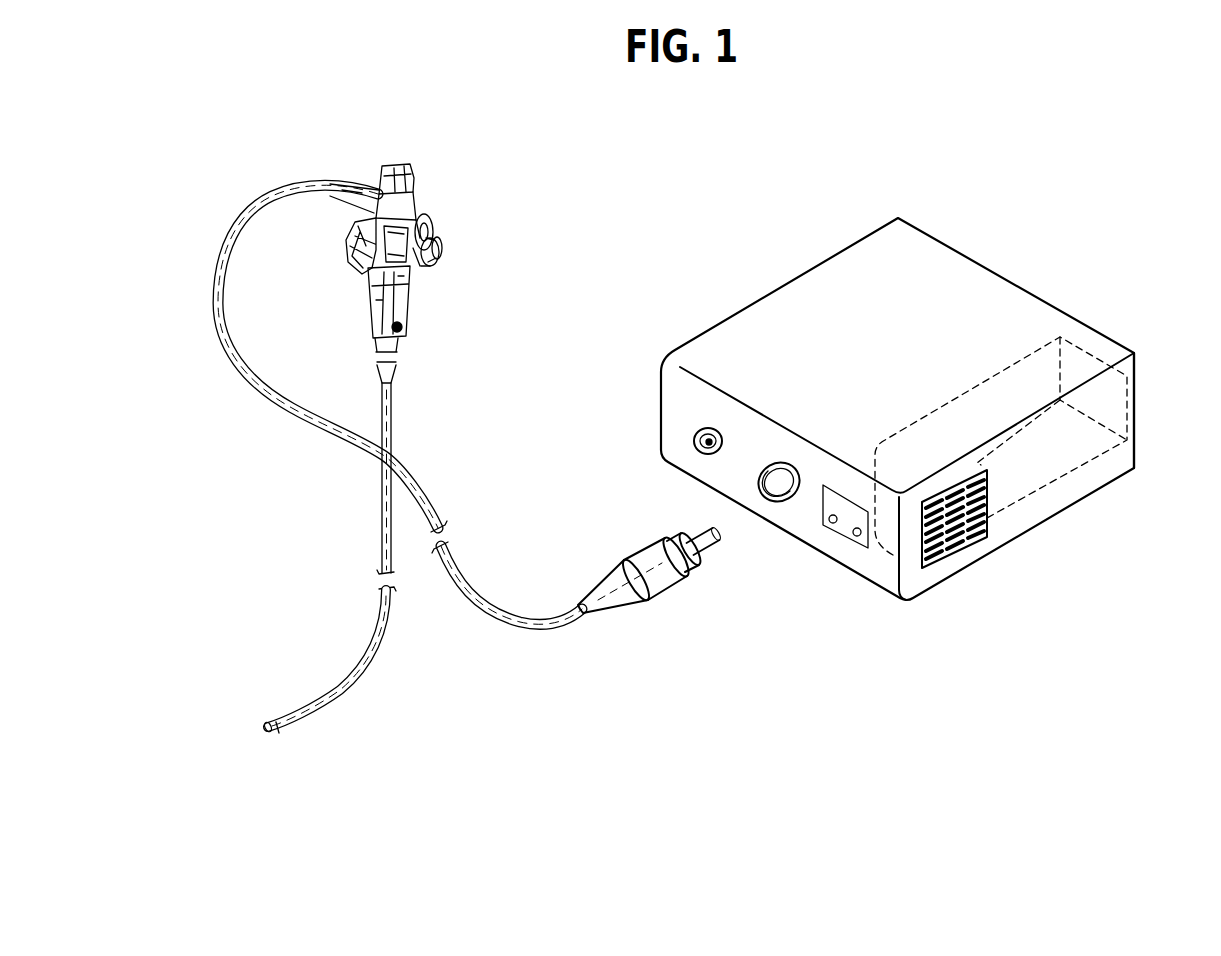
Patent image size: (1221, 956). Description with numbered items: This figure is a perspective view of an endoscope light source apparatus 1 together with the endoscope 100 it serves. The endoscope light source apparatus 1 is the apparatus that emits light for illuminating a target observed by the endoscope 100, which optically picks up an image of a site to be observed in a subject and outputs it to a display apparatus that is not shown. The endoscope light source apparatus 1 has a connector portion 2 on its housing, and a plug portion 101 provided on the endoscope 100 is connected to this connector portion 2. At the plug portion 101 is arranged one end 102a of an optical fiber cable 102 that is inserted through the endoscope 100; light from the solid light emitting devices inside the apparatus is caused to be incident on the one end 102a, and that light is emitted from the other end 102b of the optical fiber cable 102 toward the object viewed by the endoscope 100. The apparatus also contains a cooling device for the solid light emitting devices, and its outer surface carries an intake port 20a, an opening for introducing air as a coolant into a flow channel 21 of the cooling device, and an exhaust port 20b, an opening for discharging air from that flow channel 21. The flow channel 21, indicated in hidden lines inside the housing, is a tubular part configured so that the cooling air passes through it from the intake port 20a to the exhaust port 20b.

The endoscope light source apparatus 1 is at (797, 303).
The connector portion 2 is at (771, 500).
The intake port 20a is at (963, 540).
The exhaust port 20b is at (1127, 405).
The flow channel 21 is at (1013, 362).
The endoscope 100 is at (488, 473).
The plug portion 101 is at (657, 535).
The optical fiber cable 102 is at (605, 602).
The one end of the optical fiber cable 102a is at (722, 533).
The other end of the optical fiber cable 102b is at (263, 732).